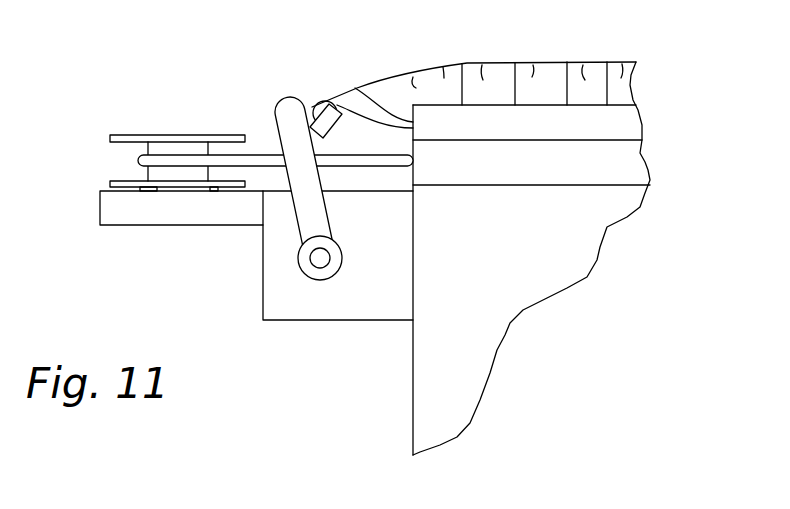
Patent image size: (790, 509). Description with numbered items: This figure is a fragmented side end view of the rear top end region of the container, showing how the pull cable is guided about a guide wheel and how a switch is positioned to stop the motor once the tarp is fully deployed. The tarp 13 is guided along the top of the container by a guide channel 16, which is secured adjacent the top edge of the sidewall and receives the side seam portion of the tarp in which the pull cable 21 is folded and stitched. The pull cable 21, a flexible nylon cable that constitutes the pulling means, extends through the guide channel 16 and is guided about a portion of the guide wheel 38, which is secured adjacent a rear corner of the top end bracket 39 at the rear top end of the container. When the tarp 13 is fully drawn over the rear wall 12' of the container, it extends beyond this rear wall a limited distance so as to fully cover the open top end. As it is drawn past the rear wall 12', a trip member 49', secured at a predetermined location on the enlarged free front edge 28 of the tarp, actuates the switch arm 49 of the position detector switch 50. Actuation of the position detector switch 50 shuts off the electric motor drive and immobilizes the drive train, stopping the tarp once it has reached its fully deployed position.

The rear wall 12' is at (483, 258).
The tarp 13 is at (543, 70).
The guide channel 16 is at (603, 125).
The pull cable 21 is at (263, 160).
The free front edge 28 is at (337, 107).
The guide wheel 38 is at (153, 135).
The top end bracket 39 is at (145, 210).
The switch arm 49 is at (271, 188).
The trip member 49' is at (363, 78).
The position detector switch 50 is at (295, 297).